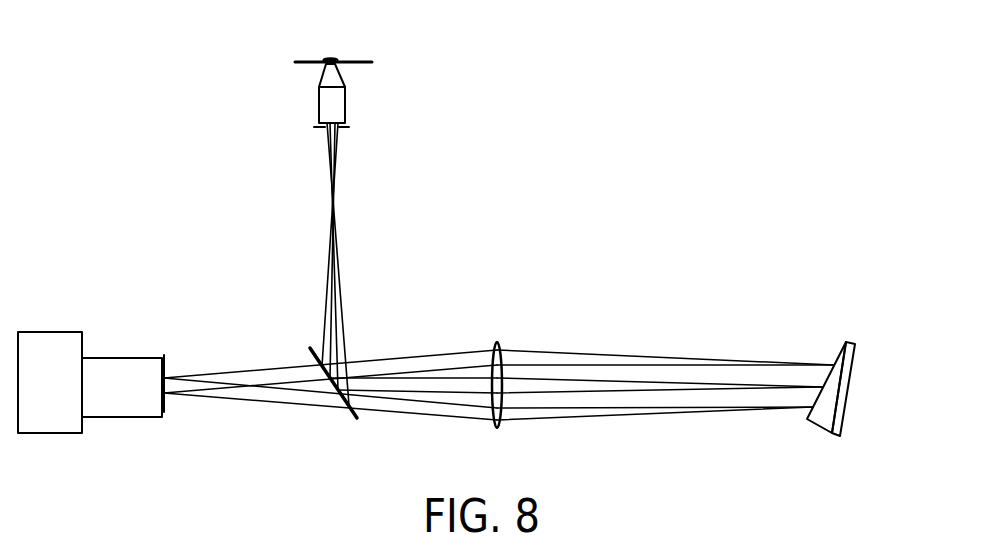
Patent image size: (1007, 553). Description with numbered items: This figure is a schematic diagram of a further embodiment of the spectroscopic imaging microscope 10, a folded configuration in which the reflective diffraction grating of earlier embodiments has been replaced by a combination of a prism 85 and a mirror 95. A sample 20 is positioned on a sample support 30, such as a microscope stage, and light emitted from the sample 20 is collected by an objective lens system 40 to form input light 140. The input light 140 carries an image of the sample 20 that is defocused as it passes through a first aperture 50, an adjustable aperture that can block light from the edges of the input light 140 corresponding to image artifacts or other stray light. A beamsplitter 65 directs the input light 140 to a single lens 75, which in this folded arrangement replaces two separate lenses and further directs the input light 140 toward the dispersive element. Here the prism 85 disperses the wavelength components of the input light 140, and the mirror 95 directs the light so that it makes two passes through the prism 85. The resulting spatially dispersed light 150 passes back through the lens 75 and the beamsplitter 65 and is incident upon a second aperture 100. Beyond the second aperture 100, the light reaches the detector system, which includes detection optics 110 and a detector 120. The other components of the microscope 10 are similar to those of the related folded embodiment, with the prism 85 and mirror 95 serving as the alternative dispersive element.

The microscope 10 is at (516, 166).
The sample 20 is at (333, 57).
The sample support 30 is at (363, 65).
The objective lens system 40 is at (319, 97).
The first aperture 50 is at (348, 128).
The input light 140 is at (333, 217).
The detector 120 is at (77, 390).
The detection optics 110 is at (143, 398).
The second aperture 100 is at (167, 362).
The spatially dispersed light 150 is at (295, 397).
The beamsplitter 65 is at (355, 420).
The lens 75 is at (497, 342).
The prism 85 is at (807, 420).
The mirror 95 is at (857, 357).